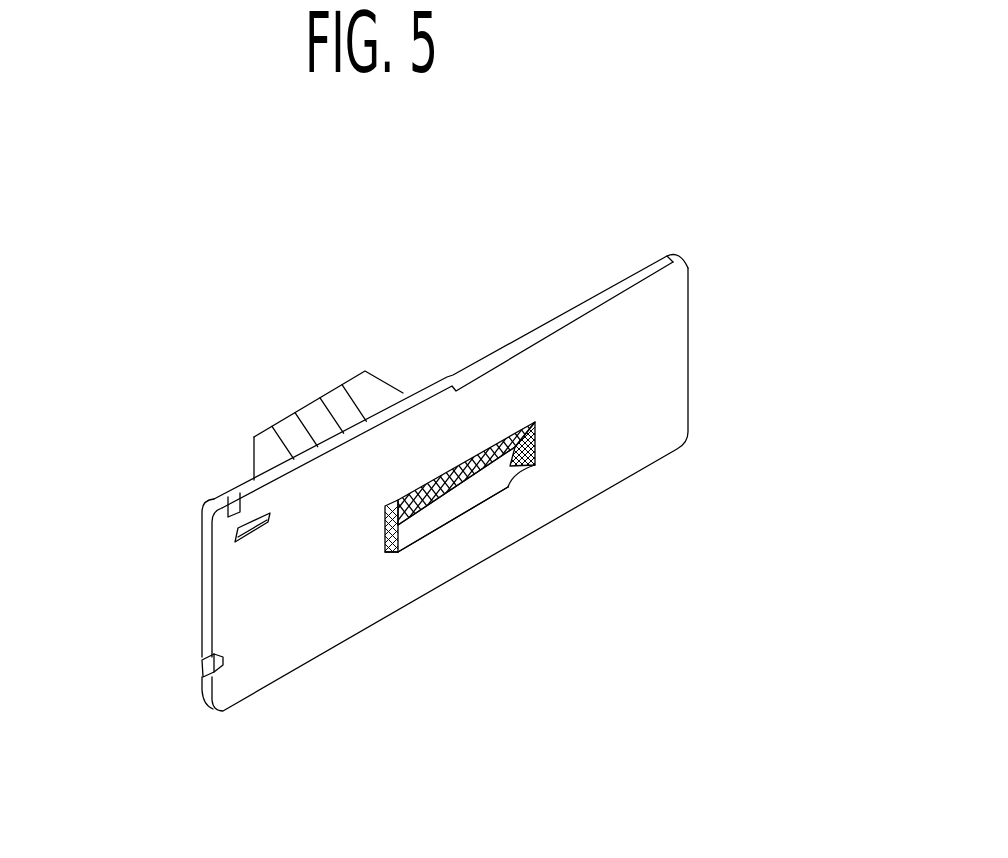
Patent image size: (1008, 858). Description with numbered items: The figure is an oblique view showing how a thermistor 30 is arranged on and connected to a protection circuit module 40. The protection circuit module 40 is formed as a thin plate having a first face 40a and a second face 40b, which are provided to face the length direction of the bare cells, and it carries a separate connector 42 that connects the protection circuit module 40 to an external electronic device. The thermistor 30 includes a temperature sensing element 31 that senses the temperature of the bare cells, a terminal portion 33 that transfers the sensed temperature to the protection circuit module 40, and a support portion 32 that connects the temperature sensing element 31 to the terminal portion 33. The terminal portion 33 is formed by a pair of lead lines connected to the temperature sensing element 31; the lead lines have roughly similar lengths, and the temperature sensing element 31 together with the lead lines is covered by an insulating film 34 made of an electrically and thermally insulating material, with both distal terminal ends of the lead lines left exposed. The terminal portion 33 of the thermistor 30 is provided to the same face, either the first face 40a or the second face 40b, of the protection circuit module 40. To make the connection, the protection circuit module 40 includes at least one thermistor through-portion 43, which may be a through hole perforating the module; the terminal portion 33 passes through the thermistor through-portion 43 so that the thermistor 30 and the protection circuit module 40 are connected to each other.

The thermistor 30 is at (416, 488).
The temperature sensing element 31 is at (533, 445).
The support portion 32 is at (455, 514).
The terminal portion 33 is at (385, 512).
The insulating film 34 is at (535, 465).
The protection circuit module 40 is at (537, 407).
The first face 40a is at (670, 370).
The second face 40b is at (625, 275).
The connector 42 is at (330, 397).
The thermistor through-portion 43 is at (388, 548).